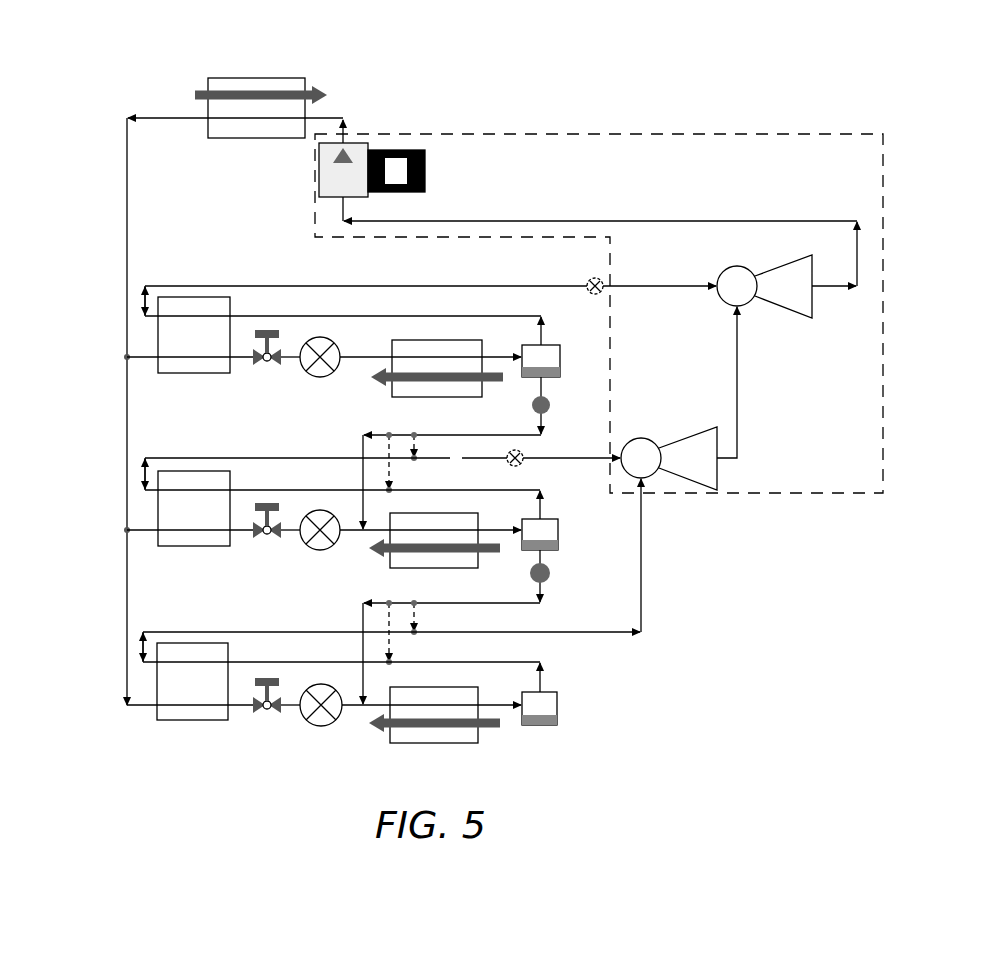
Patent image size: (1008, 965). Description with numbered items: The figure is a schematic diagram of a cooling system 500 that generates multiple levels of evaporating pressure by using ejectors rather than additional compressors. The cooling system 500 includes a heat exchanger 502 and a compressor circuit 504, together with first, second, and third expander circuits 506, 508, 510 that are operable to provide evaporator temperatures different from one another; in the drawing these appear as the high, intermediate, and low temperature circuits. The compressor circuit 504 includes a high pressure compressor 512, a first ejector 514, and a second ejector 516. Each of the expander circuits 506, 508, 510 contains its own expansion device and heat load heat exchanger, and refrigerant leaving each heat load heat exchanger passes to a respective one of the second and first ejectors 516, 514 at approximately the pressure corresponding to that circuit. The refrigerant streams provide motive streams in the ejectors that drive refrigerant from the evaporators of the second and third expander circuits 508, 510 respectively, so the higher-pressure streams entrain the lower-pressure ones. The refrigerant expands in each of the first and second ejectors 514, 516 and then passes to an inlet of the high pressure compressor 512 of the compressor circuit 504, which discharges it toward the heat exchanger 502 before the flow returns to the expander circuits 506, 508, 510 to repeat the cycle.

The cooling system 500 is at (760, 72).
The heat exchanger 502 is at (292, 77).
The compressor circuit 504 is at (842, 133).
The first expander circuit 506 is at (75, 312).
The second expander circuit 508 is at (93, 485).
The third expander circuit 510 is at (95, 655).
The high pressure compressor 512 is at (318, 163).
The first ejector 514 is at (665, 508).
The second ejector 516 is at (770, 335).